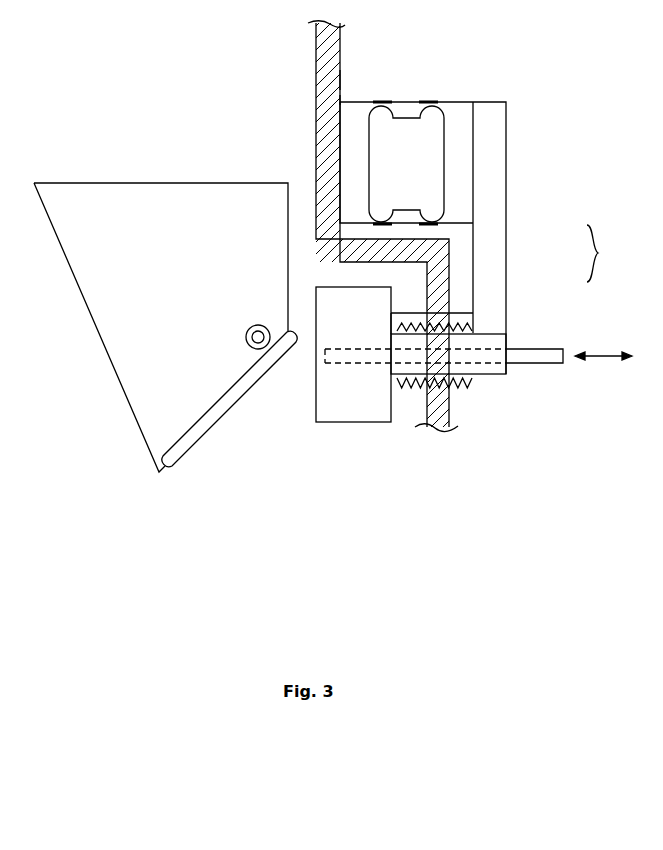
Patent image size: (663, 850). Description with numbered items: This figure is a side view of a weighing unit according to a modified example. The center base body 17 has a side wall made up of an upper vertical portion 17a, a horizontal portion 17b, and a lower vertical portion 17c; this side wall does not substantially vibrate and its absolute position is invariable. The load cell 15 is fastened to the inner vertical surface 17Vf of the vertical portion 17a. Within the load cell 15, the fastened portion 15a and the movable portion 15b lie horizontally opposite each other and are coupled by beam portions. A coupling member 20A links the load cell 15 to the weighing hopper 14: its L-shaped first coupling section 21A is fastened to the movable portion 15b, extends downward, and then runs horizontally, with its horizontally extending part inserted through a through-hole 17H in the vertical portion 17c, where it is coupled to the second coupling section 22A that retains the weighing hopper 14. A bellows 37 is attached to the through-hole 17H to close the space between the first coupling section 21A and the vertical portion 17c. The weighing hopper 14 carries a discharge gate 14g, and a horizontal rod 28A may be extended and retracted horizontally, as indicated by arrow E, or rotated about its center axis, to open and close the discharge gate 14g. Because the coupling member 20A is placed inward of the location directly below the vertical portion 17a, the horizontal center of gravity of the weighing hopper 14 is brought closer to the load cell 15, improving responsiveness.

The weighing hopper 14 is at (83, 181).
The discharge gate 14g is at (180, 453).
The load cell 15 is at (408, 99).
The fastened portion 15a is at (357, 110).
The movable portion 15b is at (458, 115).
The center base body 17 is at (314, 58).
The inner vertical surface 17Vf is at (320, 86).
The vertical portion 17a is at (318, 100).
The horizontal portion 17b is at (410, 263).
The vertical portion 17c is at (450, 417).
The through-hole 17H is at (452, 383).
The coupling member 20A is at (611, 253).
The first coupling section 21A is at (507, 234).
The second coupling section 22A is at (447, 313).
The horizontal rod 28A is at (545, 365).
The bellows 37 is at (407, 383).
The arrow E is at (605, 350).